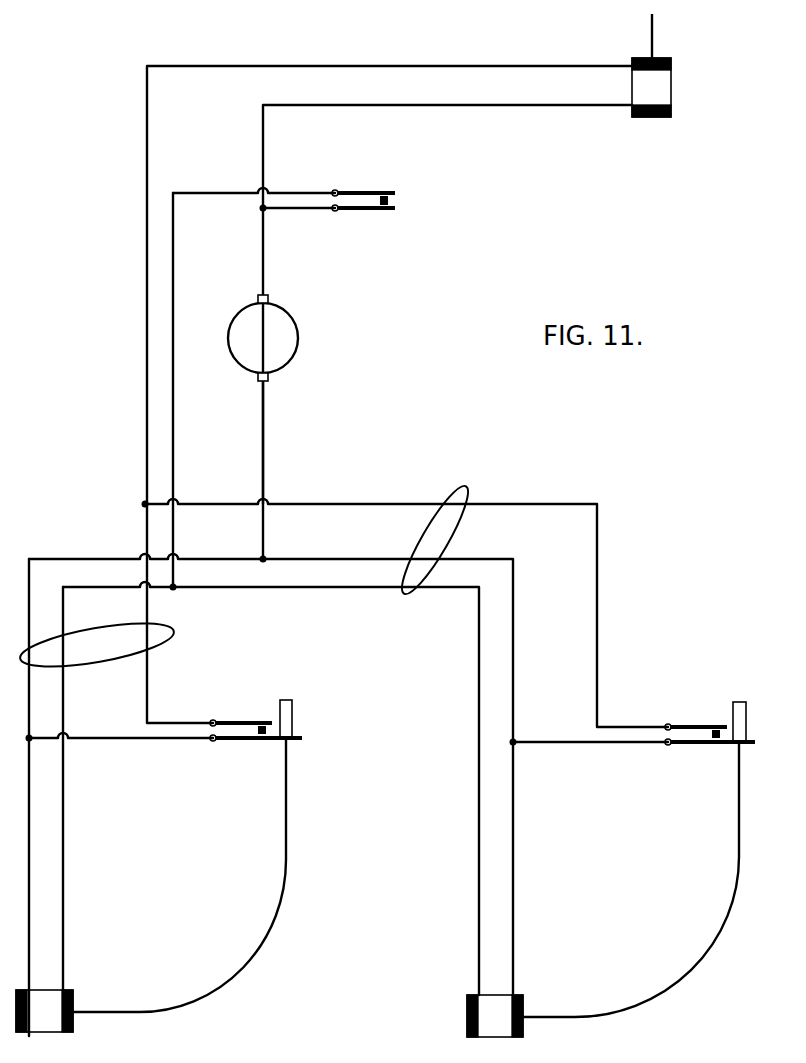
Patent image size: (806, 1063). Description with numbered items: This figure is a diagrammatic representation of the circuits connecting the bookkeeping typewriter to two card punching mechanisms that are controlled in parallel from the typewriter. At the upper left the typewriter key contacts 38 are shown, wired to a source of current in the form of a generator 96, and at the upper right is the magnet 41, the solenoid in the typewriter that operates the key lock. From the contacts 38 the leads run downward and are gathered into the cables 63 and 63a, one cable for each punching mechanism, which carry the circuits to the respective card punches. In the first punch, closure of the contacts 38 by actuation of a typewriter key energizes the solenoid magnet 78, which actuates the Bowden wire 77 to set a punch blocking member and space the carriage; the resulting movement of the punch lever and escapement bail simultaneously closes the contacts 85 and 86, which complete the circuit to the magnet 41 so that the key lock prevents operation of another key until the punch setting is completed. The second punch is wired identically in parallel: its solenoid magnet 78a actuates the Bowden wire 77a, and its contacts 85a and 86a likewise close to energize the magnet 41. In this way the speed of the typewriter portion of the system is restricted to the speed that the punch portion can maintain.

The magnet 41 is at (671, 88).
The key contacts 38 is at (383, 195).
The generator 96 is at (290, 322).
The cables 63 is at (172, 627).
The cables 63a is at (461, 487).
The contacts 85 is at (240, 721).
The contacts 86 is at (250, 742).
The contacts 85a is at (683, 725).
The contacts 86a is at (690, 746).
The Bowden wire 77 is at (286, 862).
The Bowden wire 77a is at (748, 857).
The solenoid magnet 78 is at (73, 995).
The solenoid magnet 78a is at (523, 998).